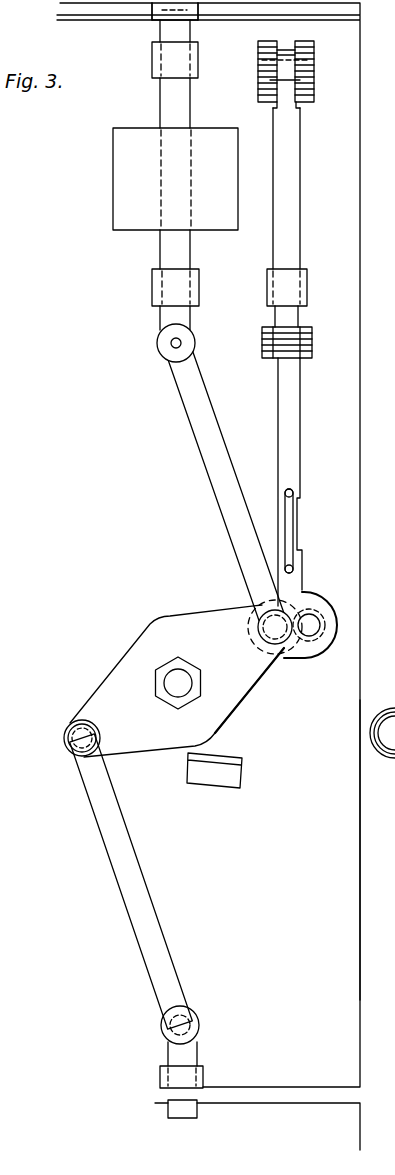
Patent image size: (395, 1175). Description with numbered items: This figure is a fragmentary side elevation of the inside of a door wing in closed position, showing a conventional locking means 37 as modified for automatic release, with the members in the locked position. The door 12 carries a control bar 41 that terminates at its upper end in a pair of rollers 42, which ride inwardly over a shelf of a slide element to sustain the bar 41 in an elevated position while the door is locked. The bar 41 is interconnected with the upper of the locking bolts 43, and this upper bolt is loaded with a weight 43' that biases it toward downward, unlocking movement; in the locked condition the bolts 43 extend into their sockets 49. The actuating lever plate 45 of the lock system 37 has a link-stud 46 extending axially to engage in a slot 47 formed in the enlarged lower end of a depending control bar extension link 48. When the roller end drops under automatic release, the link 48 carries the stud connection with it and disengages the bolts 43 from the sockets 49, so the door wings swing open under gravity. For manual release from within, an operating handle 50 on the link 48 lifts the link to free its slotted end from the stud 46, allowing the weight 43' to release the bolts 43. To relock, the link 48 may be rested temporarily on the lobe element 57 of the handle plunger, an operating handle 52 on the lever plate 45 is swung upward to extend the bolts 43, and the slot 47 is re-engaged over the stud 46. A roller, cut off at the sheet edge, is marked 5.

The sockets 49 is at (193, 18).
The rollers 42 is at (312, 98).
The control bar 41 is at (298, 226).
The weight 43' is at (169, 175).
The locking bolts 43 is at (161, 700).
The control bar extension link 48 is at (296, 443).
The operating handle 50 is at (290, 535).
The slot 47 is at (300, 590).
The lobe element 57 is at (313, 625).
The link-stud 46 is at (290, 650).
The conventional locking means 37 is at (104, 664).
The actuating lever plate 45 is at (233, 703).
The operating handle 52 is at (66, 736).
The door 12 is at (352, 866).
The roller 5 is at (382, 747).